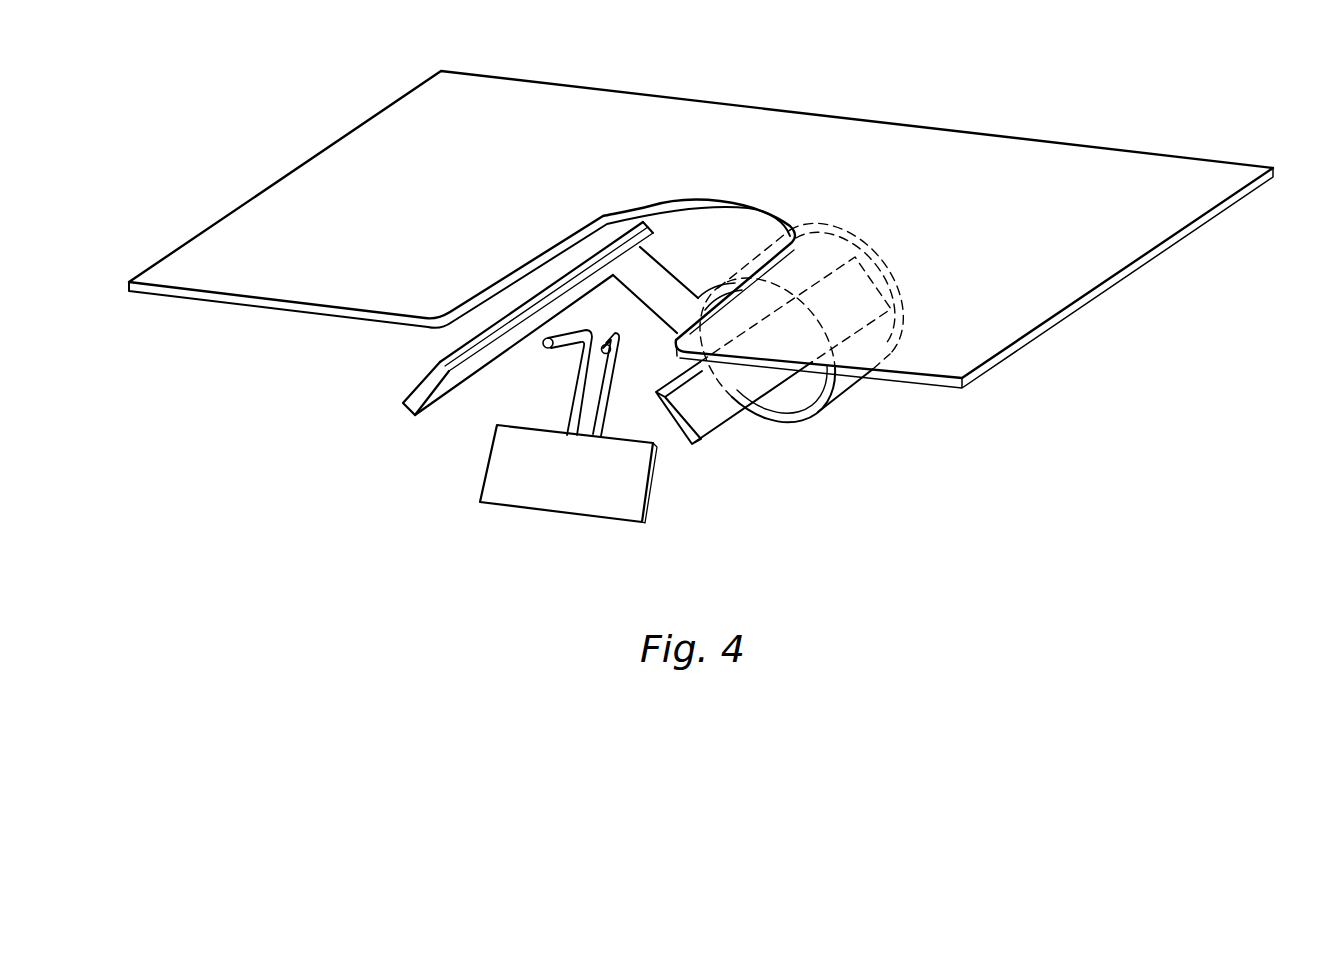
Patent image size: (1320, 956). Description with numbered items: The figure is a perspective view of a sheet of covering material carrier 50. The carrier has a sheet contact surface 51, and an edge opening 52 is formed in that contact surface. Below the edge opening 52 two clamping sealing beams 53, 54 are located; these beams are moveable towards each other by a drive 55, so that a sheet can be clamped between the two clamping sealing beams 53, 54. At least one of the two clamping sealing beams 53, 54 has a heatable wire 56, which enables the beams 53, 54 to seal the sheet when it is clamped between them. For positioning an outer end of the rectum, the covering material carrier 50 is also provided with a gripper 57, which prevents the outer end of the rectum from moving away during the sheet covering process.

The sheet of covering material carrier 50 is at (808, 531).
The sheet contact surface 51 is at (1097, 173).
The edge opening 52 is at (693, 253).
The clamping sealing beam 53 is at (418, 380).
The clamping sealing beam 54 is at (703, 405).
The drive 55 is at (767, 257).
The heatable wire 56 is at (527, 300).
The gripper 57 is at (548, 350).